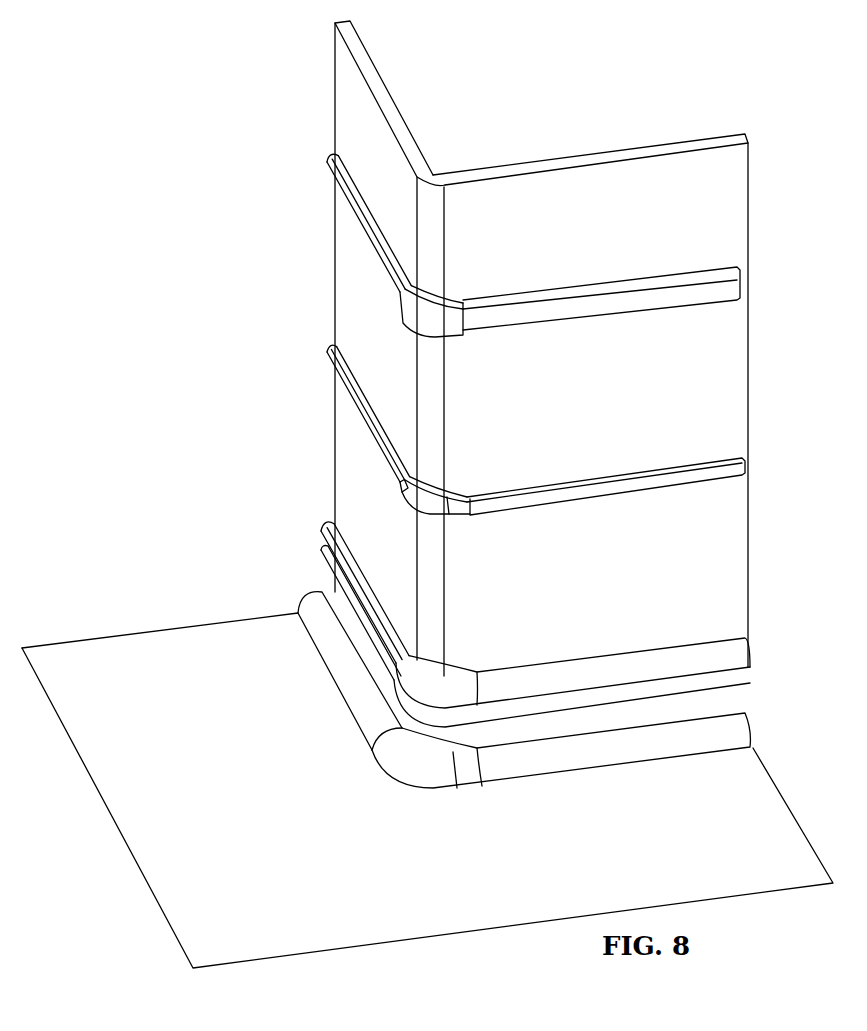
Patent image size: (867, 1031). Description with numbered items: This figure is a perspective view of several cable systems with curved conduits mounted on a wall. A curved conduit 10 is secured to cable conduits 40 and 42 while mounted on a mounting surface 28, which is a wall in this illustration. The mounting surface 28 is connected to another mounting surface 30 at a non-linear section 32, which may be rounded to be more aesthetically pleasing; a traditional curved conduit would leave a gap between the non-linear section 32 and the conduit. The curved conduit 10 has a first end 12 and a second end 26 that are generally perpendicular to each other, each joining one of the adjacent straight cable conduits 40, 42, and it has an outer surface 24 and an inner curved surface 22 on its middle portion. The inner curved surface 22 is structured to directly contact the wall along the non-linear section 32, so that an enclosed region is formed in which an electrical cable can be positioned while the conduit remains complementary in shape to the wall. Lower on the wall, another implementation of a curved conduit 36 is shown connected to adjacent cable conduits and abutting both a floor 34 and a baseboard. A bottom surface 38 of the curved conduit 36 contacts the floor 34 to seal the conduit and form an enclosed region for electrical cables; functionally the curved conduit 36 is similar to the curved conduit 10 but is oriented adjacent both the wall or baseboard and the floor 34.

The curved conduit 10 is at (449, 519).
The first end 12 is at (455, 522).
The inner curved surface 22 is at (427, 508).
The outer surface 24 is at (460, 493).
The second end 26 is at (400, 492).
The mounting surface 28 is at (617, 409).
The mounting surface 30 is at (383, 350).
The non-linear section 32 is at (433, 388).
The floor 34 is at (532, 849).
The curved conduit 36 is at (415, 773).
The bottom surface 38 is at (524, 721).
The cable conduit 40 is at (613, 488).
The cable conduit 42 is at (368, 420).